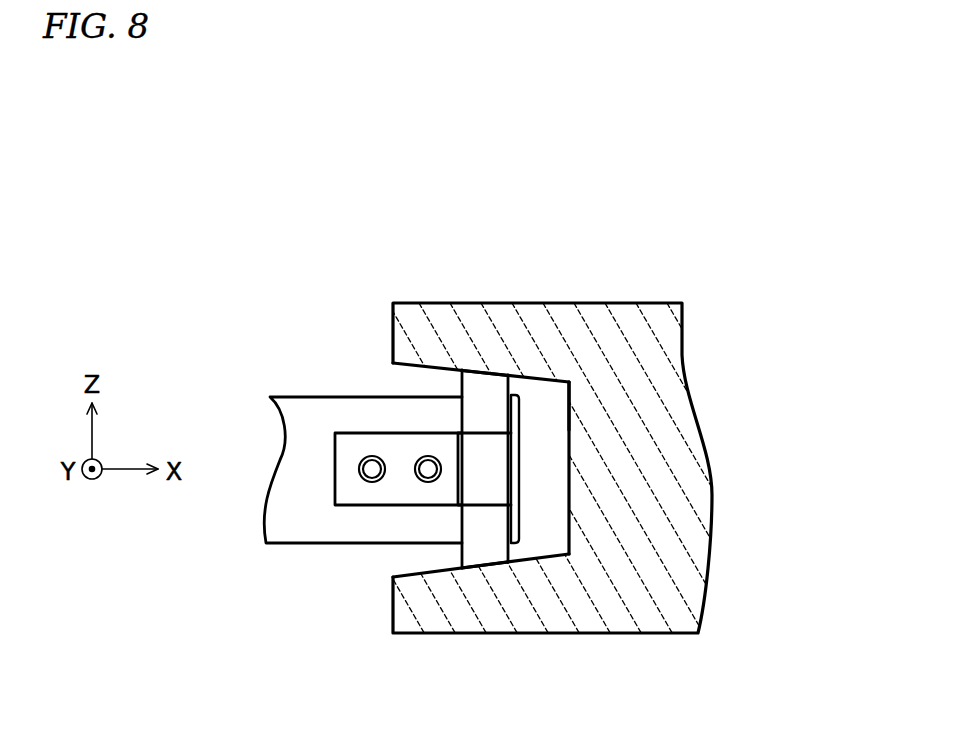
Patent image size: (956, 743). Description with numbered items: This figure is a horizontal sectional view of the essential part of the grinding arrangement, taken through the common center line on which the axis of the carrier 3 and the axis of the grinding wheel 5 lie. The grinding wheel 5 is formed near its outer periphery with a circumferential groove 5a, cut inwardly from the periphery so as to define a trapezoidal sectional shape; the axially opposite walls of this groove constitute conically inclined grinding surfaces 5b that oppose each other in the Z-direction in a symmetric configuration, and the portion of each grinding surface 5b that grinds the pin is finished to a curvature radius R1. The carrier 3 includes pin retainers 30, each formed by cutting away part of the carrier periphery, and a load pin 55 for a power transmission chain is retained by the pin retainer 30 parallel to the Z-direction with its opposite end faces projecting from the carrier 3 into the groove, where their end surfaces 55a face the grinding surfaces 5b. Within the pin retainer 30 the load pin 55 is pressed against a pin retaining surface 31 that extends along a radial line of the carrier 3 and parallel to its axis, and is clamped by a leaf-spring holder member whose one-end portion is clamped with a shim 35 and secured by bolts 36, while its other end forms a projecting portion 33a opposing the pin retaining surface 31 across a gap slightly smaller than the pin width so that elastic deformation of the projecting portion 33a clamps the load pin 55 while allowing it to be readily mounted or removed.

The carrier 3 is at (285, 392).
The grinding wheel 5 is at (592, 303).
The circumferential groove 5a is at (566, 514).
The grinding surfaces 5b is at (408, 364).
The pin retainer 30 is at (531, 400).
The pin retaining surface 31 is at (513, 432).
The projecting portion 33a is at (495, 482).
The shim 35 is at (382, 442).
The bolts 36 is at (433, 466).
The load pin 55 is at (470, 553).
The engaging surface 55a is at (489, 374).
The curvature radius R1 is at (480, 426).